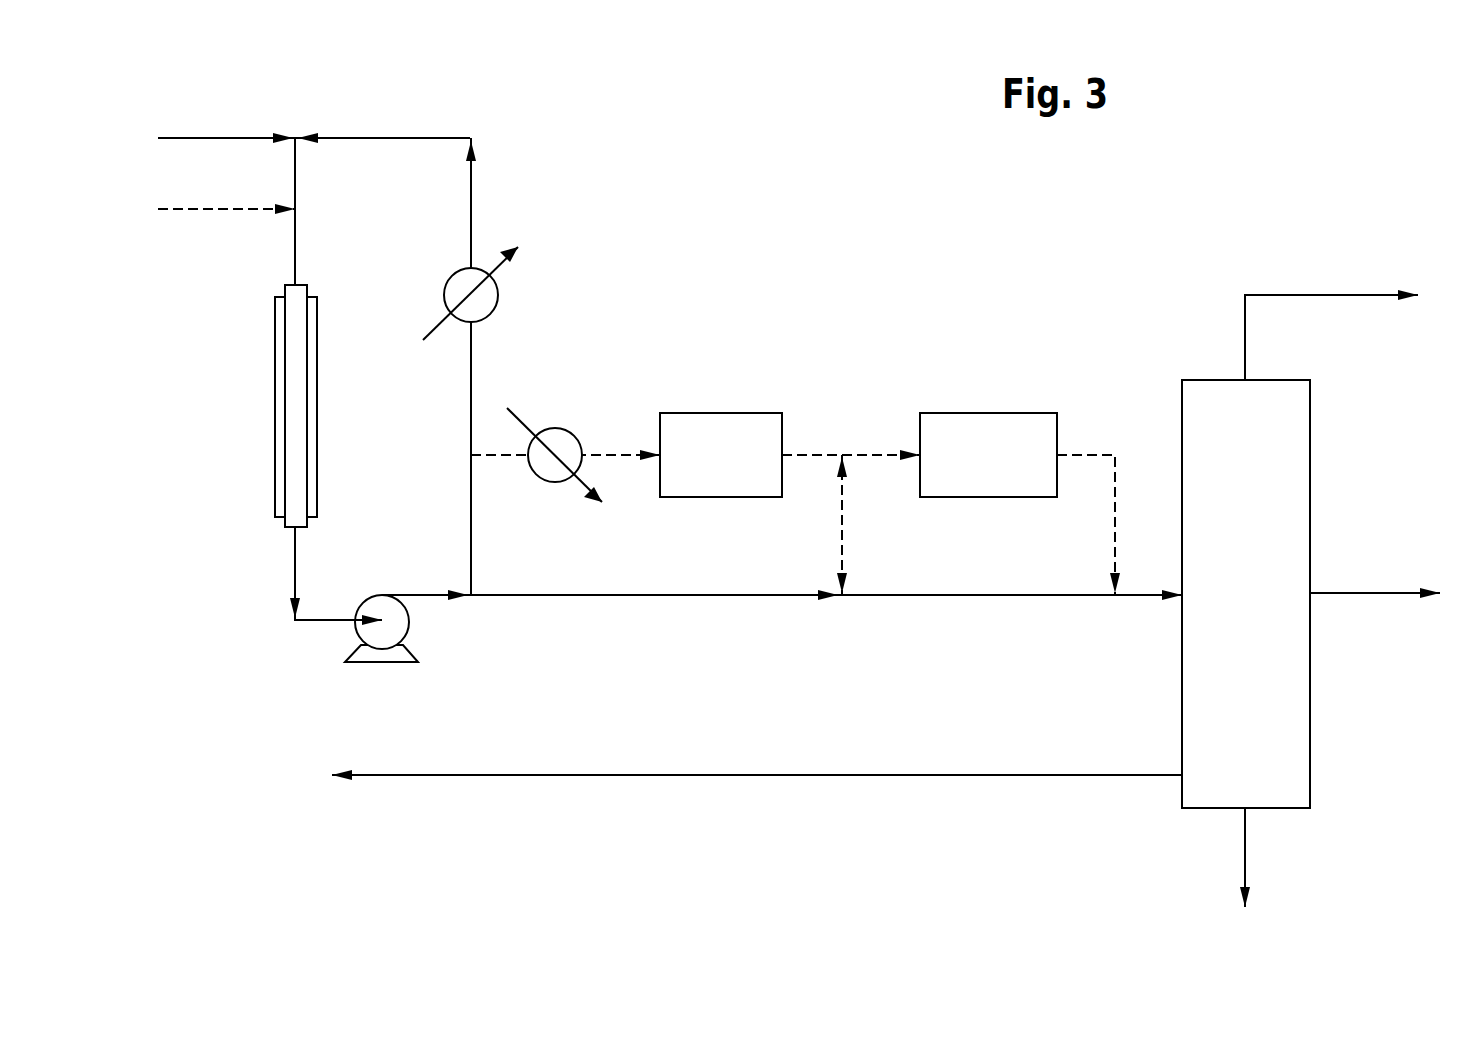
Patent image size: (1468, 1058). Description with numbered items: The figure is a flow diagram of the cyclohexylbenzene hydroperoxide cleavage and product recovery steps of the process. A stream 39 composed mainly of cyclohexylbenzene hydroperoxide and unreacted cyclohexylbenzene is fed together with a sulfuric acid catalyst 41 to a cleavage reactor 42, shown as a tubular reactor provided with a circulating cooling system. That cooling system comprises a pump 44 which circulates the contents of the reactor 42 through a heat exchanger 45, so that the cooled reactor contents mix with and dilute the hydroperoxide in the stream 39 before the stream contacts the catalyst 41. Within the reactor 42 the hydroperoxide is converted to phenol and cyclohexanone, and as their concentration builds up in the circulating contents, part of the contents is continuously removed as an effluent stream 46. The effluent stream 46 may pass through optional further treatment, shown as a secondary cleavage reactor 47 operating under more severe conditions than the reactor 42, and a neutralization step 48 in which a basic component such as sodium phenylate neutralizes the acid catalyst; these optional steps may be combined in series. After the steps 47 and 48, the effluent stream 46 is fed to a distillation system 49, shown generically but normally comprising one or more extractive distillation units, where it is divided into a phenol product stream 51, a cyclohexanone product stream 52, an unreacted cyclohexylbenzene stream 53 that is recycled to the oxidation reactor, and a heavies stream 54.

The stream 39 is at (205, 138).
The sulfuric acid catalyst 41 is at (200, 210).
The cleavage reactor 42 is at (275, 395).
The pump 44 is at (356, 632).
The heat exchanger 45 is at (449, 280).
The effluent stream 46 is at (750, 597).
The secondary cleavage reactor 47 is at (720, 413).
The neutralization step 48 is at (990, 413).
The distillation system 49 is at (1182, 697).
The phenol product stream 51 is at (1317, 298).
The cyclohexanone product stream 52 is at (1350, 595).
The unreacted cyclohexylbenzene stream 53 is at (635, 777).
The heavies stream 54 is at (1245, 845).